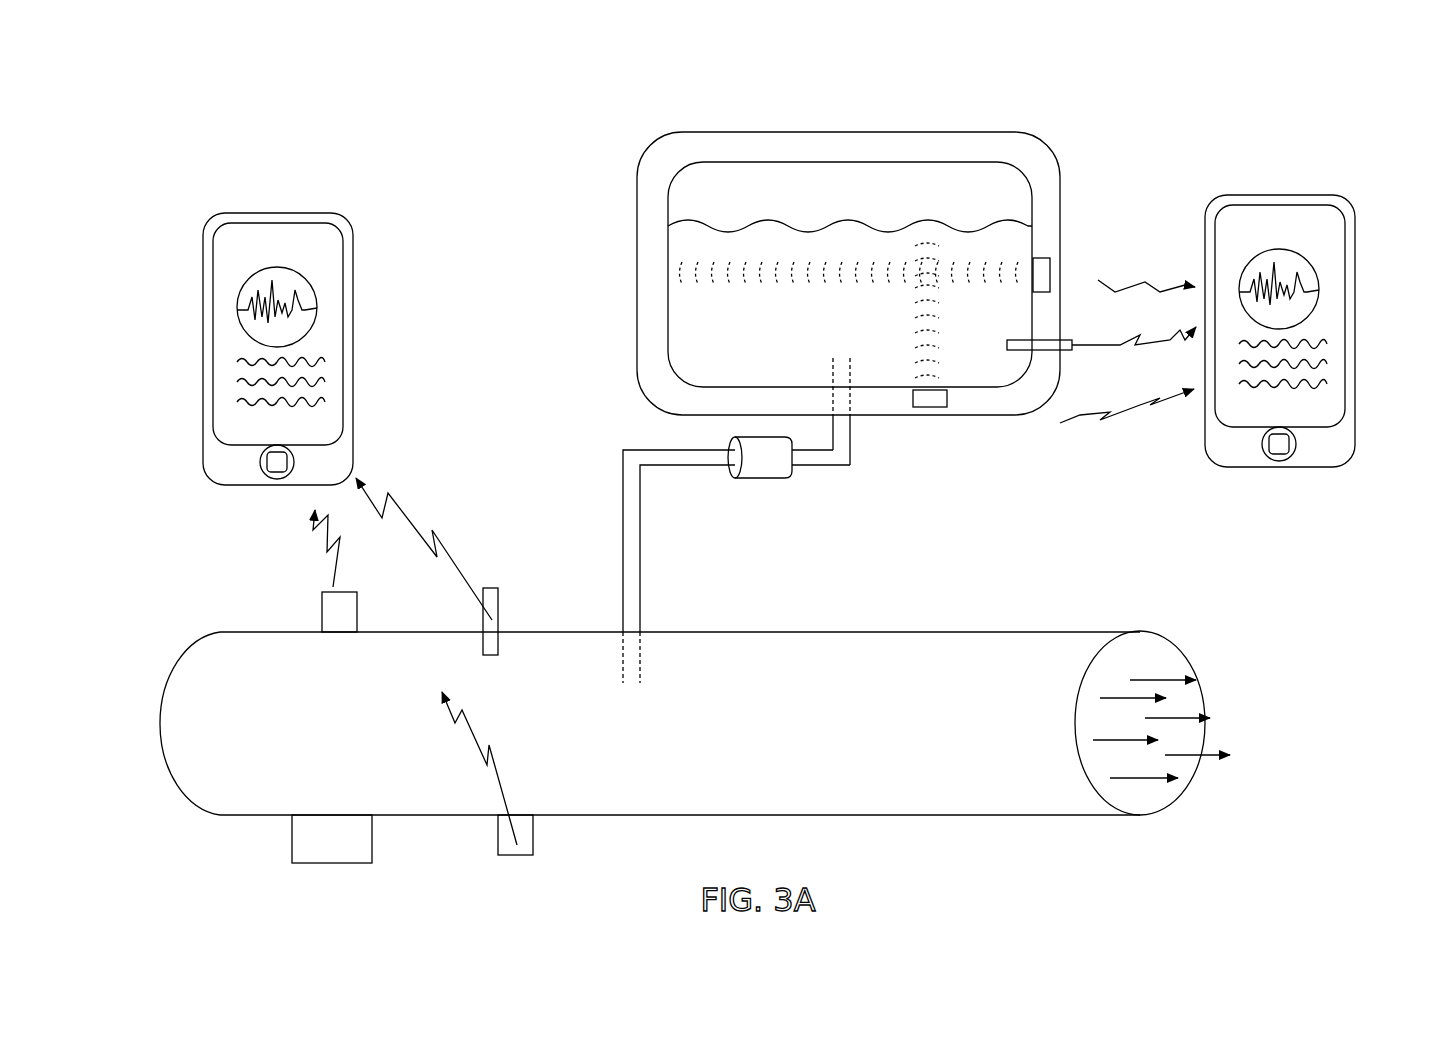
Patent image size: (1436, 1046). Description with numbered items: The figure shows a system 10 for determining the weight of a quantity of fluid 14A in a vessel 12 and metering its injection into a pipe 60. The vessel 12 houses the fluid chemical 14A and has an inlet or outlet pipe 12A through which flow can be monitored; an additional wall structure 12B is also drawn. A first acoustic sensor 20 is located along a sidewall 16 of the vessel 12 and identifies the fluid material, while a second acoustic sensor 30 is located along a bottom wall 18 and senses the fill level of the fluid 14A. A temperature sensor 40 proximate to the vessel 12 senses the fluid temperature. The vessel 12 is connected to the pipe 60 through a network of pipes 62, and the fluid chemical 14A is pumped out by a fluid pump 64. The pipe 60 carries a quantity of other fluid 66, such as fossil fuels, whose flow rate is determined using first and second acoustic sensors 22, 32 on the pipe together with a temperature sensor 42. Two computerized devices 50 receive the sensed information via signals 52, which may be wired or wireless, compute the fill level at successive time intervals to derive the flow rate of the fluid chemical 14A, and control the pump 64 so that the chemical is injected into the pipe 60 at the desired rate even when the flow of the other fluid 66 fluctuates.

The system 10 is at (318, 146).
The vessel 12 is at (781, 232).
The inlet or outlet pipe 12A is at (668, 192).
The outer tank wall 12B is at (637, 245).
The quantity of fluid 14A is at (755, 341).
The sidewall 16 is at (622, 333).
The bottom wall 18 is at (698, 421).
The first acoustic sensor 20 is at (1050, 262).
The acoustic sensor 22 is at (338, 625).
The second acoustic sensor 30 is at (925, 407).
The acoustic sensor 32 is at (512, 840).
The temperature sensor 40 is at (1065, 352).
The temperature sensor 42 is at (487, 588).
The computerized device 50 is at (350, 280).
The signals 52 is at (340, 548).
The pipe 60 is at (731, 736).
The network of pipes 62 is at (628, 547).
The fluid pump 64 is at (750, 470).
The quantity of other fluid 66 is at (1185, 730).